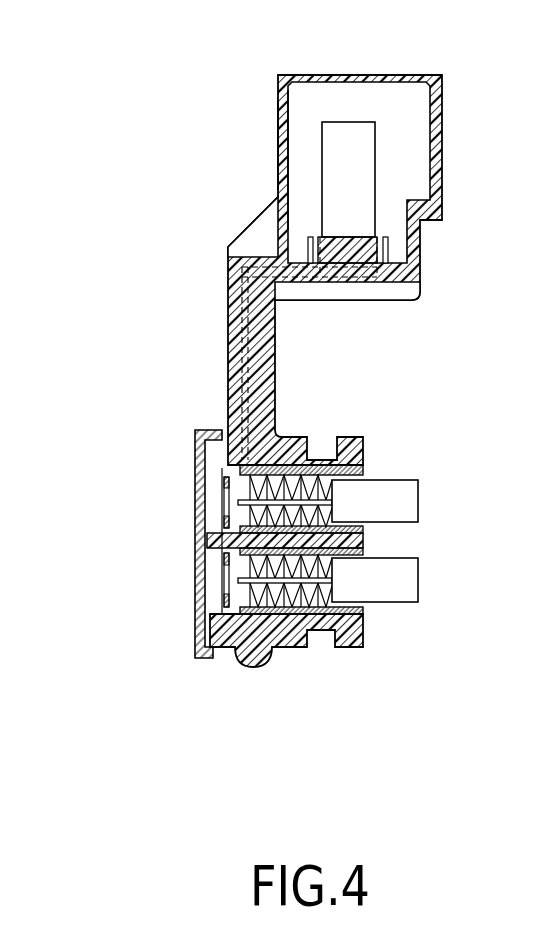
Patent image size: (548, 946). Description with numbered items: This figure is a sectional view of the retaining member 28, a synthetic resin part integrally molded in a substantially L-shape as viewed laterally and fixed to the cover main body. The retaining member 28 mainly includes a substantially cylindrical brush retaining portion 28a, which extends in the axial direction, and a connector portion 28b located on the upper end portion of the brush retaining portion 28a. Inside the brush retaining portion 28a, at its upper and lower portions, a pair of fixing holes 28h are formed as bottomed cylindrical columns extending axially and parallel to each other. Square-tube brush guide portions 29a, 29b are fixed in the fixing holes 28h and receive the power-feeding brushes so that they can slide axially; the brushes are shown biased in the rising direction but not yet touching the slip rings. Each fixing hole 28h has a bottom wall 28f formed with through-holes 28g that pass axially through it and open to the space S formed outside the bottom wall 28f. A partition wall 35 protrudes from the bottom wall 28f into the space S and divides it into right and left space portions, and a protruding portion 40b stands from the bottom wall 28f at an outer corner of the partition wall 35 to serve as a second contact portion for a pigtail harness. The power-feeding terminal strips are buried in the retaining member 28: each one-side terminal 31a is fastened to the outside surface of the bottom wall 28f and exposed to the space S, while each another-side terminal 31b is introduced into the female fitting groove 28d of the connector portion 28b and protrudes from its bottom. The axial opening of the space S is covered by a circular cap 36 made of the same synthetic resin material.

The retaining member 28 is at (168, 341).
The brush retaining portion 28a is at (295, 642).
The connector portion 28b is at (277, 128).
The female fitting groove 28d is at (292, 115).
The bottom wall 28f is at (213, 562).
The through-hole 28g is at (227, 495).
The fixing hole 28h is at (357, 492).
The brush guide portion 29a is at (318, 468).
The brush guide portion 29b is at (313, 615).
The one-side terminal 31a is at (213, 485).
The another-side terminal 31b is at (352, 130).
The partition wall 35 is at (220, 538).
The circular cap 36 is at (197, 633).
The protruding portion 40b is at (227, 575).
The space S is at (215, 487).